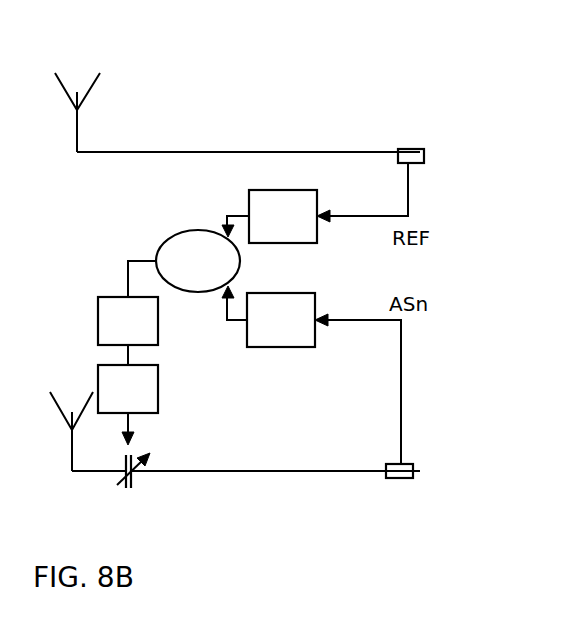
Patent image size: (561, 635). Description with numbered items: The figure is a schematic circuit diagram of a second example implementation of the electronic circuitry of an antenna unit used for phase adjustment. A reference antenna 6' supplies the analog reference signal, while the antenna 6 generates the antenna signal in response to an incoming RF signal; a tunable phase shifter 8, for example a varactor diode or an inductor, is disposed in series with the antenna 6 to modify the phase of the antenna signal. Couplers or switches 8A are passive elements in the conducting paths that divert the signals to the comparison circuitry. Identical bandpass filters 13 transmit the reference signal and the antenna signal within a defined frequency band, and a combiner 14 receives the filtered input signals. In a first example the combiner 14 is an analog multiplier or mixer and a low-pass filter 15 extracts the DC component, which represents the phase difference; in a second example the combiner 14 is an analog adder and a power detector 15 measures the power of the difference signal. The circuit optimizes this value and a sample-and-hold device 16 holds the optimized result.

The reference antenna 6' is at (65, 112).
The coupler or switch 8A is at (414, 149).
The bandpass filter 13 is at (295, 228).
The combiner 14 is at (181, 233).
The low-pass filter 15 is at (140, 332).
The sample-and-hold device 16 is at (140, 400).
The antenna 6 is at (59, 431).
The tunable phase shifter 8 is at (134, 478).